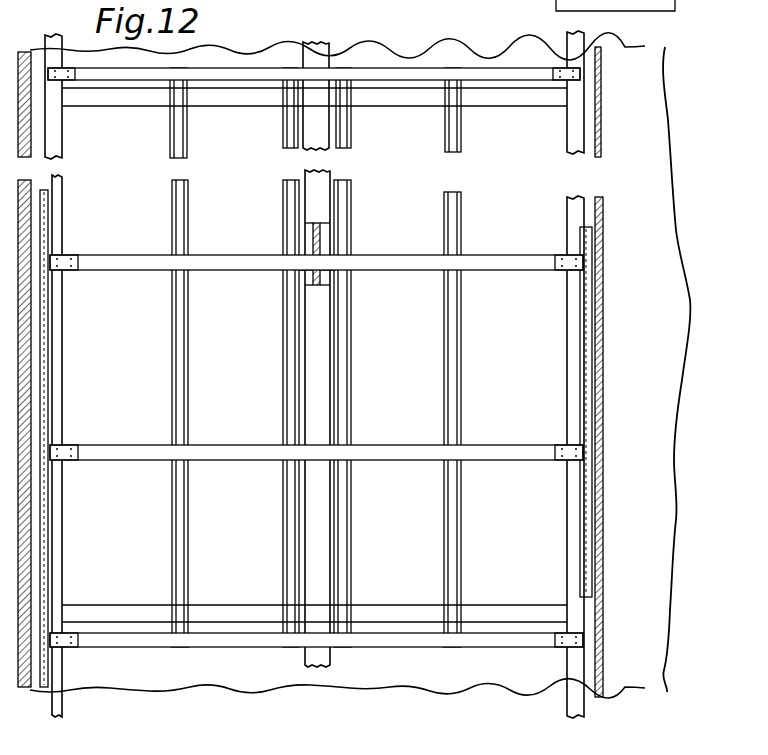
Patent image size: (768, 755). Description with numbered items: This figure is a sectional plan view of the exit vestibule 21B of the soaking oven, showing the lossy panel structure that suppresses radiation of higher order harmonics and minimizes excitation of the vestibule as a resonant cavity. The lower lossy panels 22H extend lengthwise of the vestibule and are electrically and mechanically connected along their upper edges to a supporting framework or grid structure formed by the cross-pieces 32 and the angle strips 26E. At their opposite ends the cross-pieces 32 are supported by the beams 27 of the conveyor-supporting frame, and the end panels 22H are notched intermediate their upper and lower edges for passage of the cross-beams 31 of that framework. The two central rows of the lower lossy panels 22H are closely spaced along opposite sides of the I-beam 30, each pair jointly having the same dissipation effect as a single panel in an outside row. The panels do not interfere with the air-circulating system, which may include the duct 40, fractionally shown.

The exit vestibule 21B is at (665, 341).
The lower lossy panels 22H is at (449, 412).
The angle strips 26E is at (172, 133).
The beams 27 is at (54, 200).
The I-beam 30 is at (320, 49).
The cross-beams 31 is at (509, 98).
The cross-pieces 32 is at (230, 77).
The duct 40 is at (667, 392).